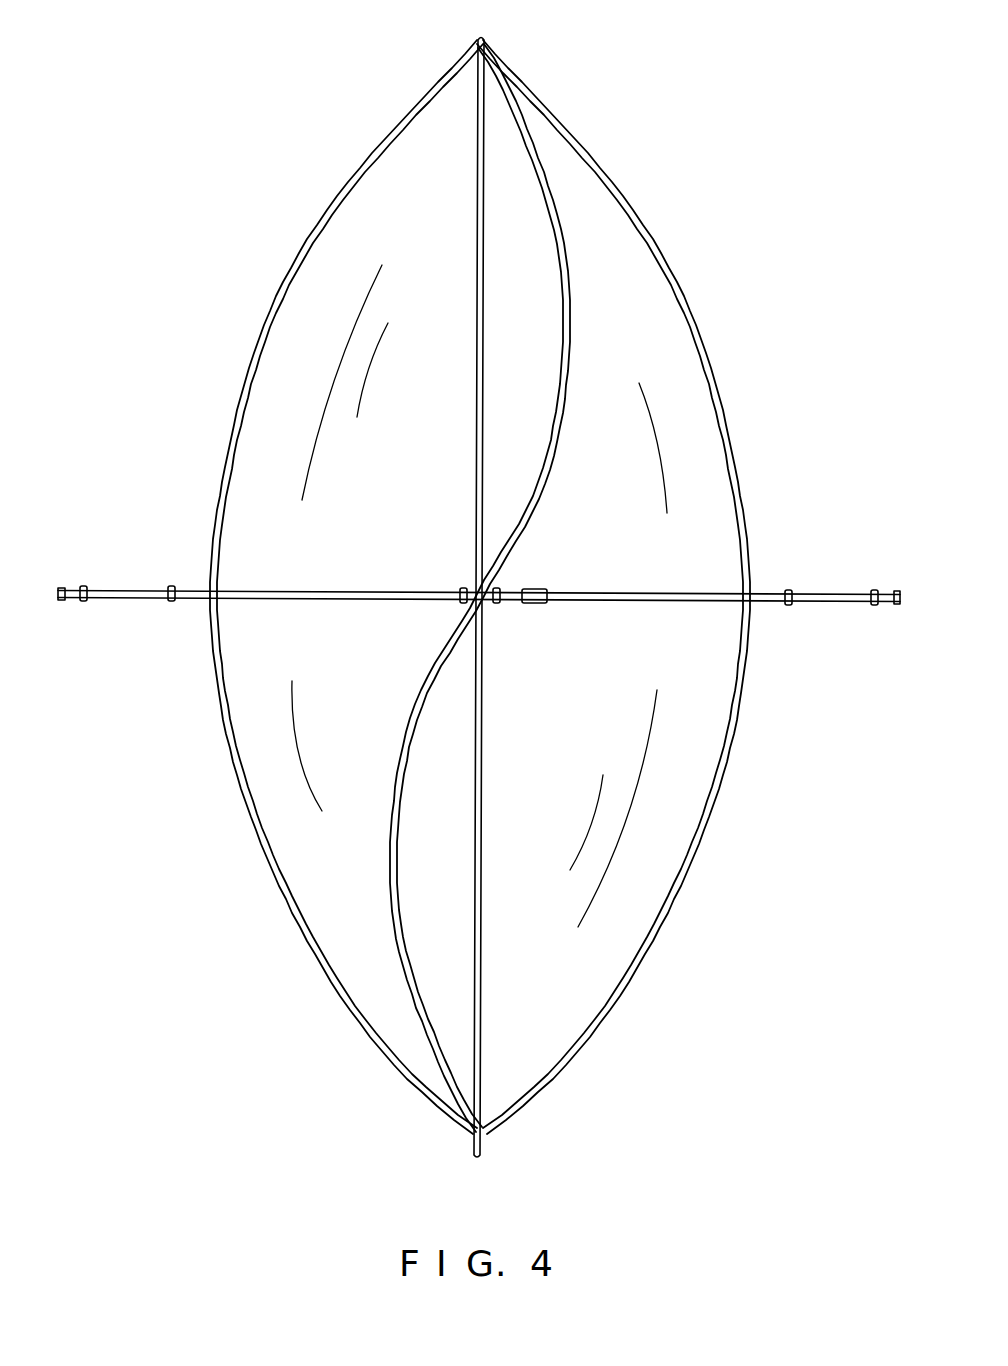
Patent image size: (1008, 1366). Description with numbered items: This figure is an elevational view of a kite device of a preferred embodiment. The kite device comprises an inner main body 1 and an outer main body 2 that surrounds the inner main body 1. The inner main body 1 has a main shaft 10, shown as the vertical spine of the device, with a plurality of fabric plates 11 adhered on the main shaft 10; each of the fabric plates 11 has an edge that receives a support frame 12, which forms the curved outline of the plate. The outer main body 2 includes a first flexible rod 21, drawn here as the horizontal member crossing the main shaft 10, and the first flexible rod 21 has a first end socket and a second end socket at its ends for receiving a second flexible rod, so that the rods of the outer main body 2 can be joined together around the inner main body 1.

The inner main body 1 is at (676, 250).
The main shaft 10 is at (487, 40).
The fabric plates 11 is at (701, 436).
The support frame 12 is at (693, 333).
The outer main body 2 is at (824, 608).
The first flexible rod 21 is at (78, 553).